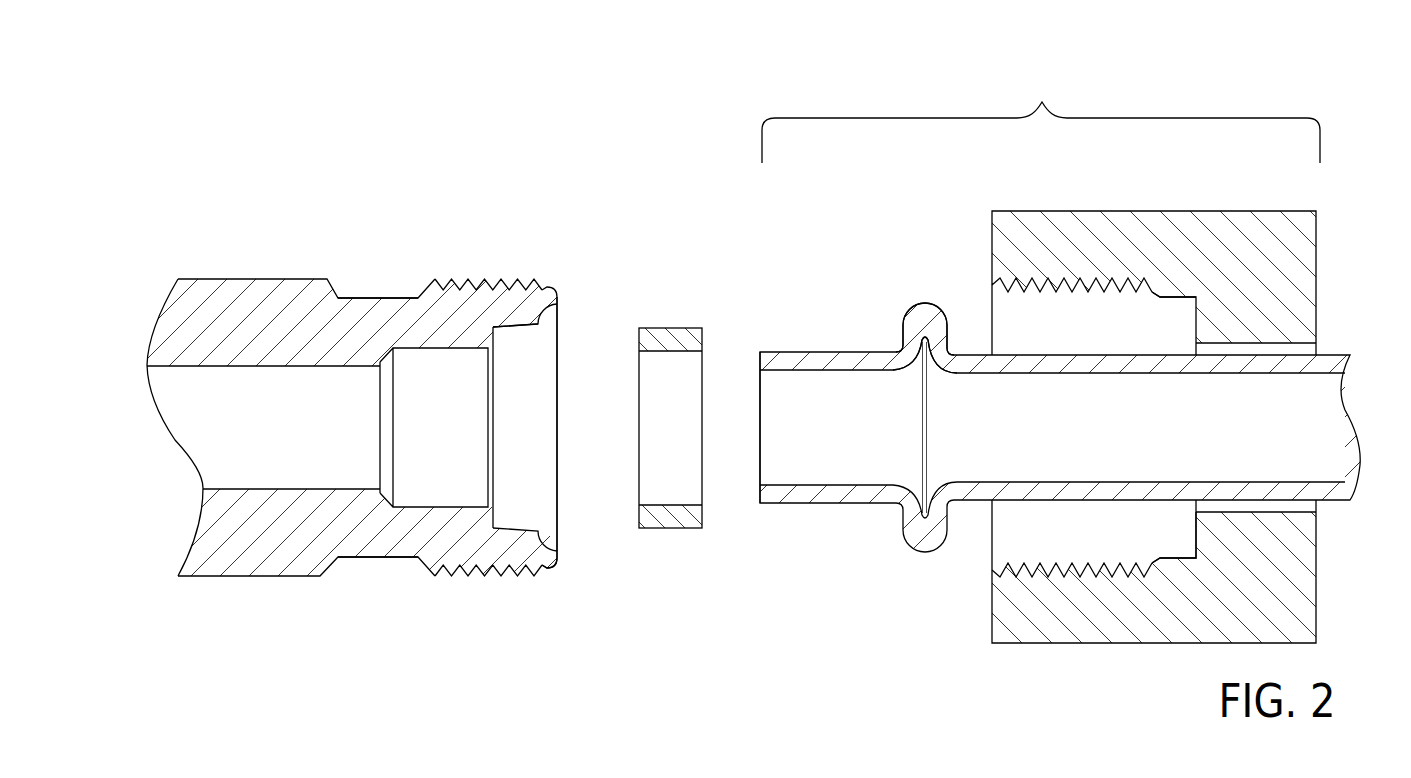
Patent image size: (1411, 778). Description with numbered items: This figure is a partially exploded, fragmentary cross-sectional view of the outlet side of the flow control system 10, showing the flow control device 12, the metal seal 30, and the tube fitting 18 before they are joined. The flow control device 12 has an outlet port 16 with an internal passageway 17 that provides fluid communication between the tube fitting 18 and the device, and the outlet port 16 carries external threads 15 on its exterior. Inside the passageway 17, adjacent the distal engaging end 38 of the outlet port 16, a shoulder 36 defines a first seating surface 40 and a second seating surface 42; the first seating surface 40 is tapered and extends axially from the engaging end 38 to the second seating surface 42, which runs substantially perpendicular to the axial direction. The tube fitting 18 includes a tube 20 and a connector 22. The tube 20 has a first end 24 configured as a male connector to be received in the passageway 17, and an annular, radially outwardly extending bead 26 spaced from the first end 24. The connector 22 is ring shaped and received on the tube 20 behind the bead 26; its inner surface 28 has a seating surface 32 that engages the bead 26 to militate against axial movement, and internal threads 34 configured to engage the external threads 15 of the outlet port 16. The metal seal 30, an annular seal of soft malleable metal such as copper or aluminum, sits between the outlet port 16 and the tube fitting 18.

The flow control system 10 is at (1290, 86).
The flow control device 12 is at (325, 274).
The external threads 15 is at (498, 280).
The outlet port 16 is at (393, 302).
The internal passageway 17 is at (247, 366).
The tube fitting 18 is at (1041, 117).
The tube 20 is at (1334, 355).
The connector 22 is at (1096, 210).
The first end 24 is at (760, 504).
The bead 26 is at (925, 303).
The inner surface 28 is at (1180, 300).
The metal seal 30 is at (670, 327).
The seating surface 32 is at (1191, 539).
The internal threads 34 is at (1024, 289).
The shoulder 36 is at (493, 163).
The engaging end 38 is at (557, 556).
The first seating surface 40 is at (557, 328).
The second seating surface 42 is at (500, 333).